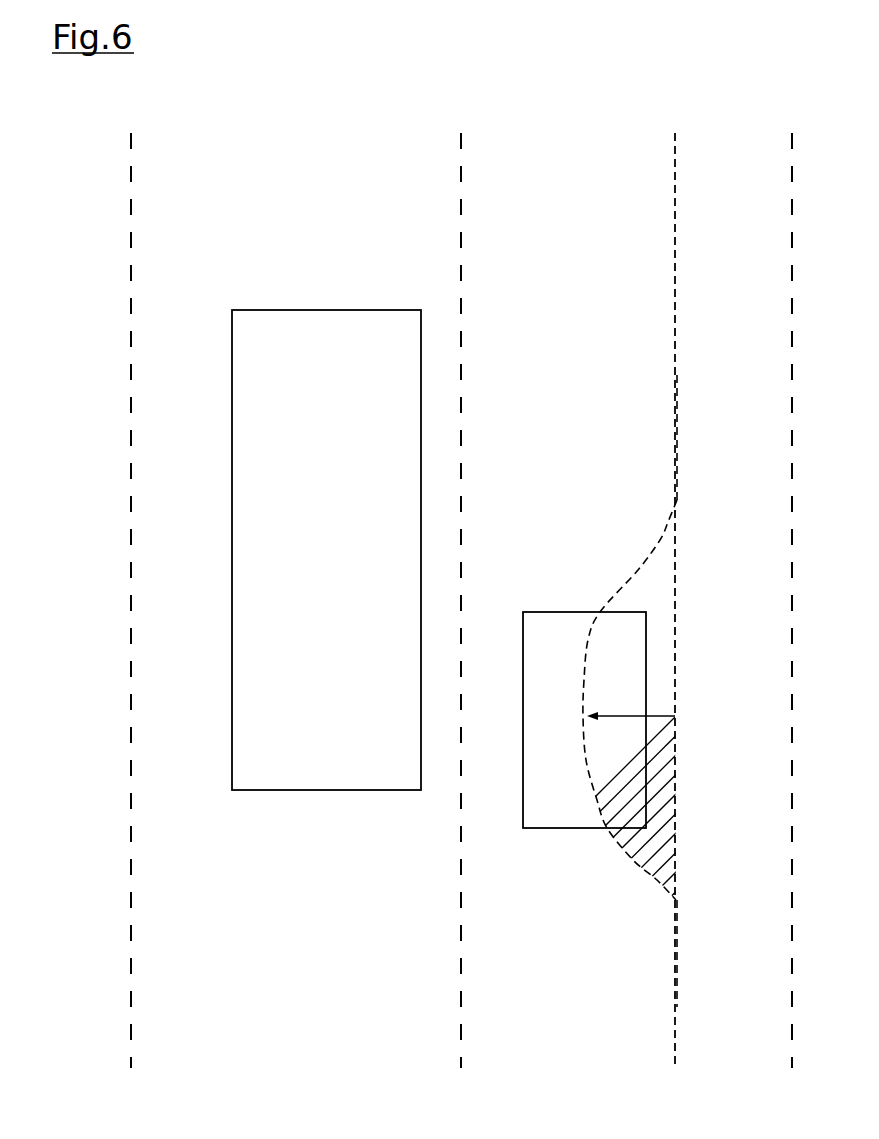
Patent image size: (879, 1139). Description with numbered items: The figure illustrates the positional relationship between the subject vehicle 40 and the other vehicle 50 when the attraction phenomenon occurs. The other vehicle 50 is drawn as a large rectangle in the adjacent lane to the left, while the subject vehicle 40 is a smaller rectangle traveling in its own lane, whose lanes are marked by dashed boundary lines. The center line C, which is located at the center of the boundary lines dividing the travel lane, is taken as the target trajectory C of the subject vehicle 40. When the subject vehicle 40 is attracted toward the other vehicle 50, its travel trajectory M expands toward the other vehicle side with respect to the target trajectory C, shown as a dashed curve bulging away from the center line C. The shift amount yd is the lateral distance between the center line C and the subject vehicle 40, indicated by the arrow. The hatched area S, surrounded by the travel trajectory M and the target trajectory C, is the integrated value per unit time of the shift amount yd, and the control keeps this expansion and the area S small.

The other vehicle 50 is at (321, 310).
The subject vehicle 40 is at (568, 828).
The center line C is at (673, 585).
The travel trajectory M is at (638, 570).
The area S is at (662, 808).
The shift amount yd is at (648, 716).